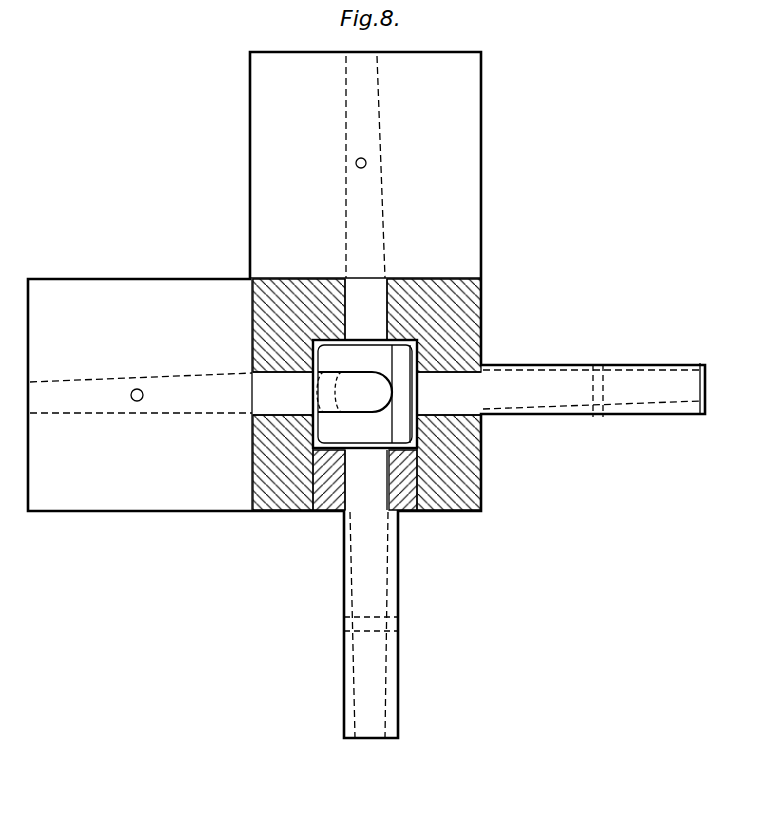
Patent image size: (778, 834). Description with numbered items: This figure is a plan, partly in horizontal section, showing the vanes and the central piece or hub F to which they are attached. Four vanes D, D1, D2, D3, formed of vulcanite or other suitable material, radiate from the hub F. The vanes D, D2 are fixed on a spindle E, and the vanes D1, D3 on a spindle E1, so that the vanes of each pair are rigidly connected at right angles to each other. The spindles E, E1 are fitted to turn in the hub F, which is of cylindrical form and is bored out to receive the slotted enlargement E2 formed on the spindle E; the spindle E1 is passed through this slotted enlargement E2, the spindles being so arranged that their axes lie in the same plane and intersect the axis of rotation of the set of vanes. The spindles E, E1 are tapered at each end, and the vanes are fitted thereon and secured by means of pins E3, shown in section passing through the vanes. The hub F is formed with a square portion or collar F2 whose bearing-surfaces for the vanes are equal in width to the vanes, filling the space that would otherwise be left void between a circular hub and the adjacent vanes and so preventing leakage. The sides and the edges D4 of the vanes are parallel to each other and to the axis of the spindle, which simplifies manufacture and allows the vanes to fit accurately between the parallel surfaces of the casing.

The vane D is at (365, 167).
The vane D1 is at (591, 390).
The vane D2 is at (371, 625).
The vane D3 is at (141, 395).
The edge of vane D4 is at (250, 162).
The spindle E is at (367, 394).
The spindle E1 is at (354, 392).
The slotted enlargement E2 is at (365, 394).
The pin E3 is at (366, 163).
The hub F is at (367, 394).
The square portion or collar F2 is at (494, 481).